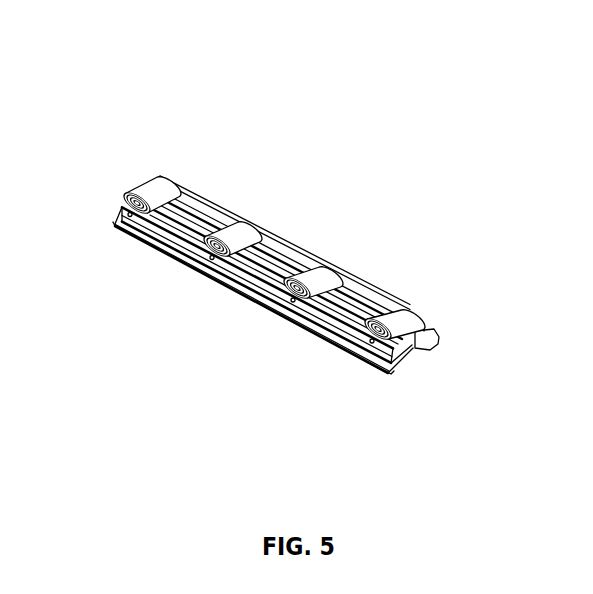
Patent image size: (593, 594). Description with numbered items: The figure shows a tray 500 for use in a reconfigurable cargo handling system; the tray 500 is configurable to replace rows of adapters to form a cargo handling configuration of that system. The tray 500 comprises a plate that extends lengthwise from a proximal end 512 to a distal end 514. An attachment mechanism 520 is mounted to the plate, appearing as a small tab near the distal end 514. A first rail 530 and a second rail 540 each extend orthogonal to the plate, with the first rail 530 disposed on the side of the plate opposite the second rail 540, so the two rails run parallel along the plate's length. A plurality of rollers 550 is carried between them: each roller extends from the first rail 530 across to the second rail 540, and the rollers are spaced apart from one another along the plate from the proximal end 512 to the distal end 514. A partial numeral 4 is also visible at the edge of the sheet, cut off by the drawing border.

The tray 500 is at (71, 117).
The proximal end 512 is at (113, 222).
The distal end 514 is at (392, 370).
The attachment mechanism 520 is at (439, 343).
The first rail 530 is at (226, 288).
The second rail 540 is at (286, 237).
The plurality of rollers 550 is at (238, 221).
The partial reference numeral 4 is at (7, 361).